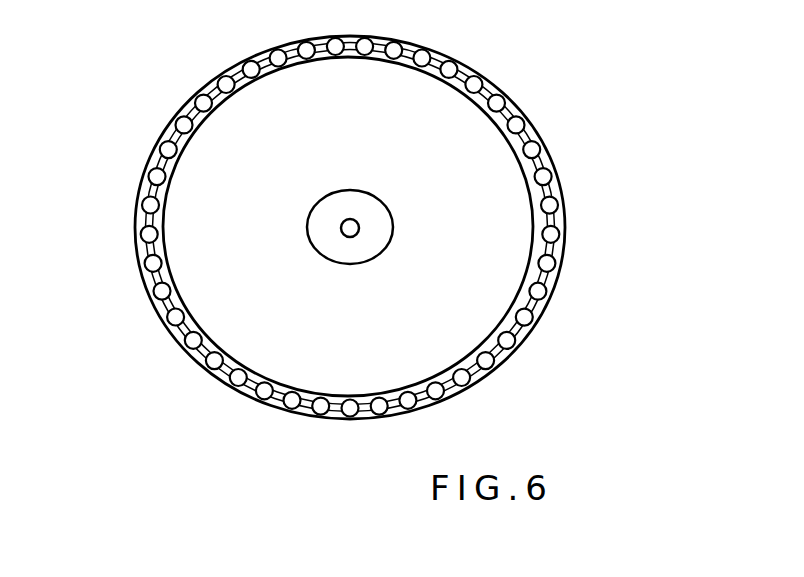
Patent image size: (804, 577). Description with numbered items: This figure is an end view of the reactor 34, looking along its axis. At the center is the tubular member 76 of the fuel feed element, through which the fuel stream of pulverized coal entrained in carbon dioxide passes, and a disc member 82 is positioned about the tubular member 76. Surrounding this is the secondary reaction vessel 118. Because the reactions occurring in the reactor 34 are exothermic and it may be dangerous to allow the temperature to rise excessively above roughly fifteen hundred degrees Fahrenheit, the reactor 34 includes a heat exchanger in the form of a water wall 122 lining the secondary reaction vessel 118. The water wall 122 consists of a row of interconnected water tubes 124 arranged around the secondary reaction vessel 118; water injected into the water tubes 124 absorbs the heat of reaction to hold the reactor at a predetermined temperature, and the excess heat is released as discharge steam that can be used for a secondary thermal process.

The reactor 34 is at (178, 479).
The tubular member 76 is at (345, 237).
The disc member 82 is at (370, 207).
The secondary reaction vessel 118 is at (518, 293).
The water wall 122 is at (196, 93).
The water tubes 124 is at (142, 183).